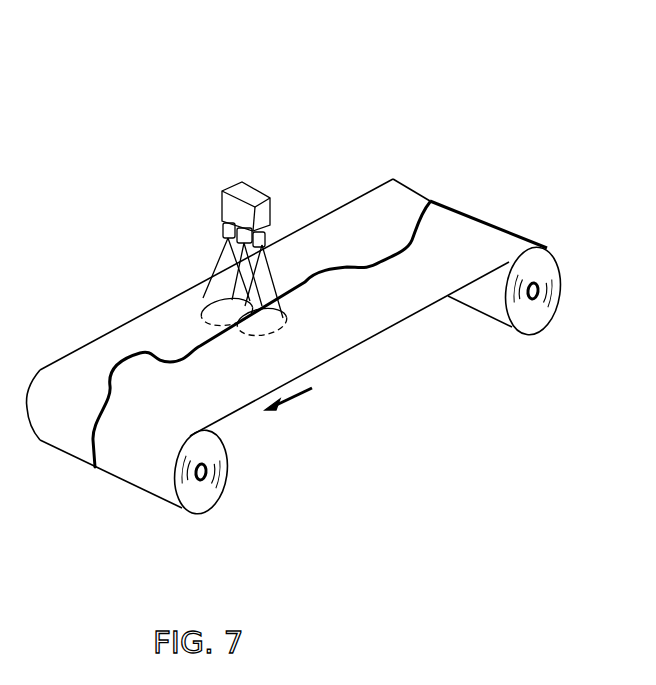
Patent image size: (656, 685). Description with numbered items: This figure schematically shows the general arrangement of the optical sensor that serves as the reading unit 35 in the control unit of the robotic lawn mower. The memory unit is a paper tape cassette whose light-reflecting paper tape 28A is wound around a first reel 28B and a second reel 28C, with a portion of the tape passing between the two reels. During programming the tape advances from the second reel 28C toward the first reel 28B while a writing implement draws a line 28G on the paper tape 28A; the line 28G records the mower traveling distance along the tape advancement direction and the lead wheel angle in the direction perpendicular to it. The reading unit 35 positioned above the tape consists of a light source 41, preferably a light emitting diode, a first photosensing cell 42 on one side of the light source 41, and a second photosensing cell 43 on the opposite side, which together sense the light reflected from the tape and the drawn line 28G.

The reading unit 35 is at (242, 187).
The light source 41 is at (237, 238).
The first photosensing cell 42 is at (228, 226).
The second photosensing cell 43 is at (265, 238).
The paper tape 28A is at (348, 352).
The first reel 28B is at (200, 502).
The second reel 28C is at (533, 332).
The line 28G is at (429, 205).